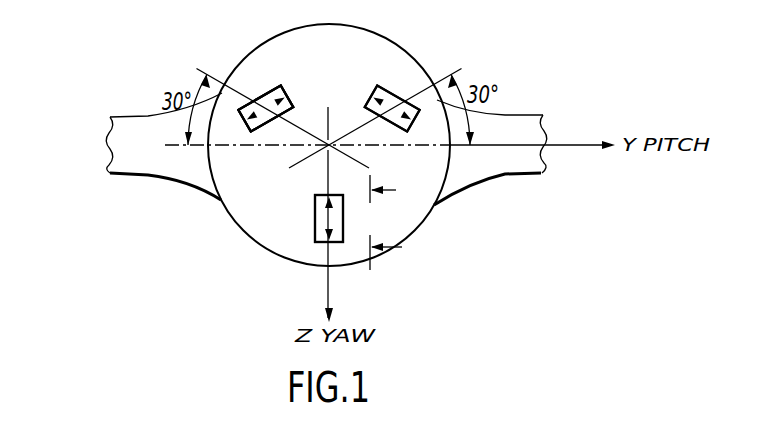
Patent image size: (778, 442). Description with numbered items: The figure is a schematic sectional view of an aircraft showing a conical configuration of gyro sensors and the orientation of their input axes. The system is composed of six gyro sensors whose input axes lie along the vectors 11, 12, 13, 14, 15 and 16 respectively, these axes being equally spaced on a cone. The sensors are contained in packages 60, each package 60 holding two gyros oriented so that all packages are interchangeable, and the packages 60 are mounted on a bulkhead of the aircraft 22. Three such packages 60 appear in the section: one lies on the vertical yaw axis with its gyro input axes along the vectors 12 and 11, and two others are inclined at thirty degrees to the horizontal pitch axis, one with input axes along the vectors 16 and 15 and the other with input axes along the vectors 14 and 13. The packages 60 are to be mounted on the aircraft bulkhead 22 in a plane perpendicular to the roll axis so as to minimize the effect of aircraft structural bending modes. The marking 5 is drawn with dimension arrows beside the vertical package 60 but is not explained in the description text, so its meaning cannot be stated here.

The offset distance 5 is at (398, 220).
The gyro input axis vector 11 is at (332, 229).
The gyro input axis vector 12 is at (334, 202).
The gyro input axis vector 13 is at (381, 108).
The gyro input axis vector 14 is at (392, 97).
The gyro input axis vector 15 is at (269, 123).
The gyro input axis vector 16 is at (265, 94).
The aircraft bulkhead 22 is at (432, 56).
The gyro package 60 is at (267, 92).